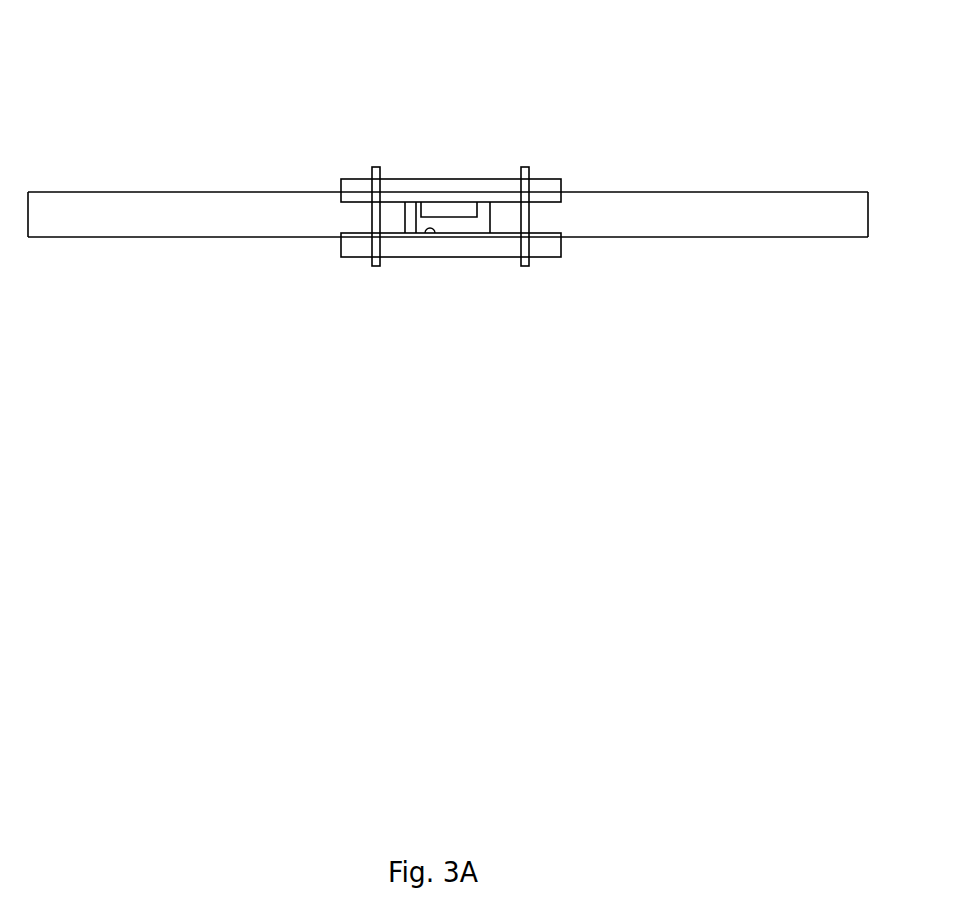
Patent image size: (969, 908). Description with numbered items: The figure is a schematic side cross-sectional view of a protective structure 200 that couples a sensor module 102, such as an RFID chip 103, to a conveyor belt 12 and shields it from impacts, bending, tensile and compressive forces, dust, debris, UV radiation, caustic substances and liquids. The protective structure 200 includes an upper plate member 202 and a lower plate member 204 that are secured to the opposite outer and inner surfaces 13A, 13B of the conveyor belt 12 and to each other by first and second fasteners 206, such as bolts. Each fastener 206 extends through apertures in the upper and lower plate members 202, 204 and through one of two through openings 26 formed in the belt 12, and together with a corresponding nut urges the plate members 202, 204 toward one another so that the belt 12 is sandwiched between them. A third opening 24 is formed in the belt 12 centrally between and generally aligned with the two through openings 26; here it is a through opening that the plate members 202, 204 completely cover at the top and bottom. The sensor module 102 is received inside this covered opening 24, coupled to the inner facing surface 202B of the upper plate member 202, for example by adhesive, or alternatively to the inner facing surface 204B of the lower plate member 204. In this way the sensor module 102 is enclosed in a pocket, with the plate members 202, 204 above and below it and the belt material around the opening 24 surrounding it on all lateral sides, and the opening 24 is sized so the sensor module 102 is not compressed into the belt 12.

The conveyor belt 12 is at (448, 224).
The outer surface of the conveyor belt 13A is at (655, 190).
The inner surface of the conveyor belt 13B is at (692, 238).
The opening 24 is at (510, 206).
The through openings 26 is at (370, 218).
The sensor module 102 is at (510, 292).
The RFID chip 103 is at (466, 217).
The protective structure 200 is at (436, 249).
The upper plate member 202 is at (490, 187).
The inner facing surface of the upper plate member 202B is at (414, 229).
The lower plate member 204 is at (445, 340).
The inner facing surface of the lower plate member 204B is at (435, 233).
The fasteners 206 is at (436, 172).